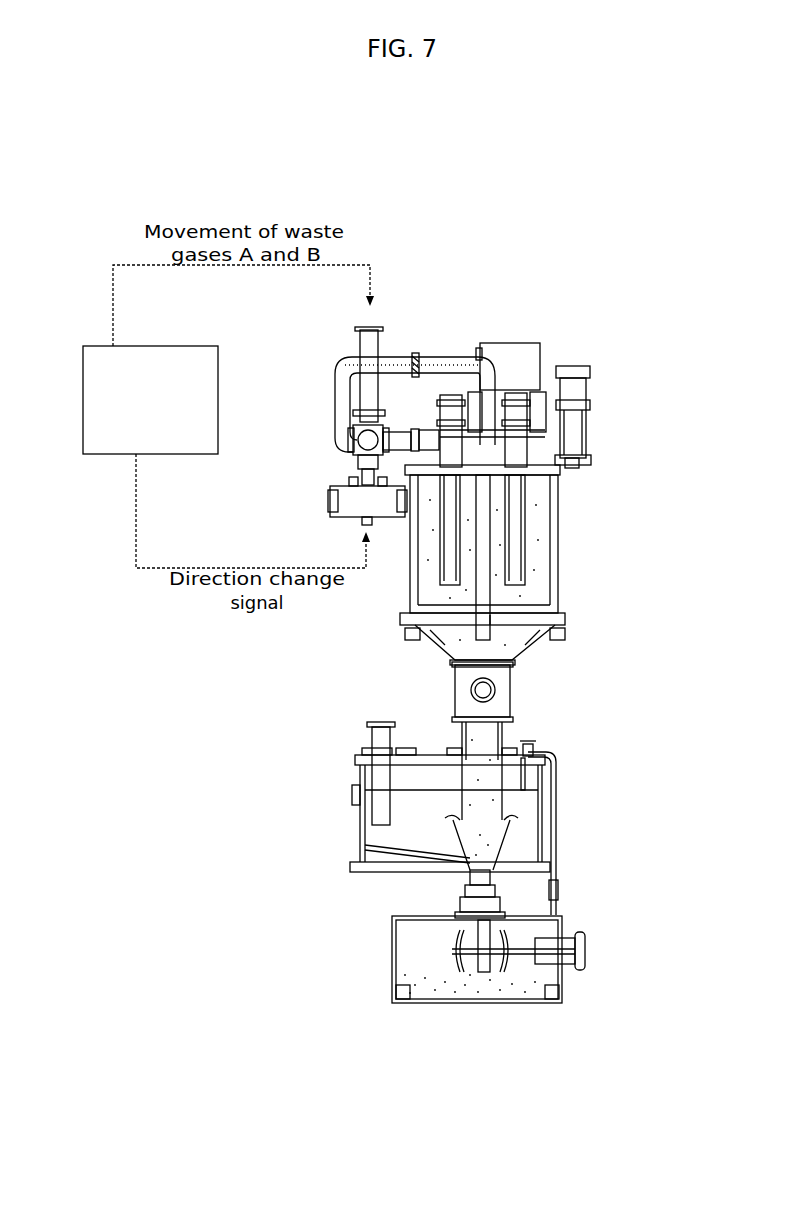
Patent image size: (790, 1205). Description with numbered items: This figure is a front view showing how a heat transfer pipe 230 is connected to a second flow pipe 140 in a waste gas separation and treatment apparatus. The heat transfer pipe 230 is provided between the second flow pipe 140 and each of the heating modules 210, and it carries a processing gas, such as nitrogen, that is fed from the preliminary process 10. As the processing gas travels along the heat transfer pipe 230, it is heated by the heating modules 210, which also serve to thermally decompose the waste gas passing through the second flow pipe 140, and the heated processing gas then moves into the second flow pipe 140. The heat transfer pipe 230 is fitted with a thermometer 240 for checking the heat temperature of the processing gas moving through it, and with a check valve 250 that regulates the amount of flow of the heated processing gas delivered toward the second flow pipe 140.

The preliminary process 10 is at (168, 347).
The second flow pipe 140 is at (582, 438).
The heating module 210 is at (447, 395).
The heat transfer pipe 230 is at (462, 385).
The thermometer 240 is at (410, 395).
The check valve 250 is at (423, 395).